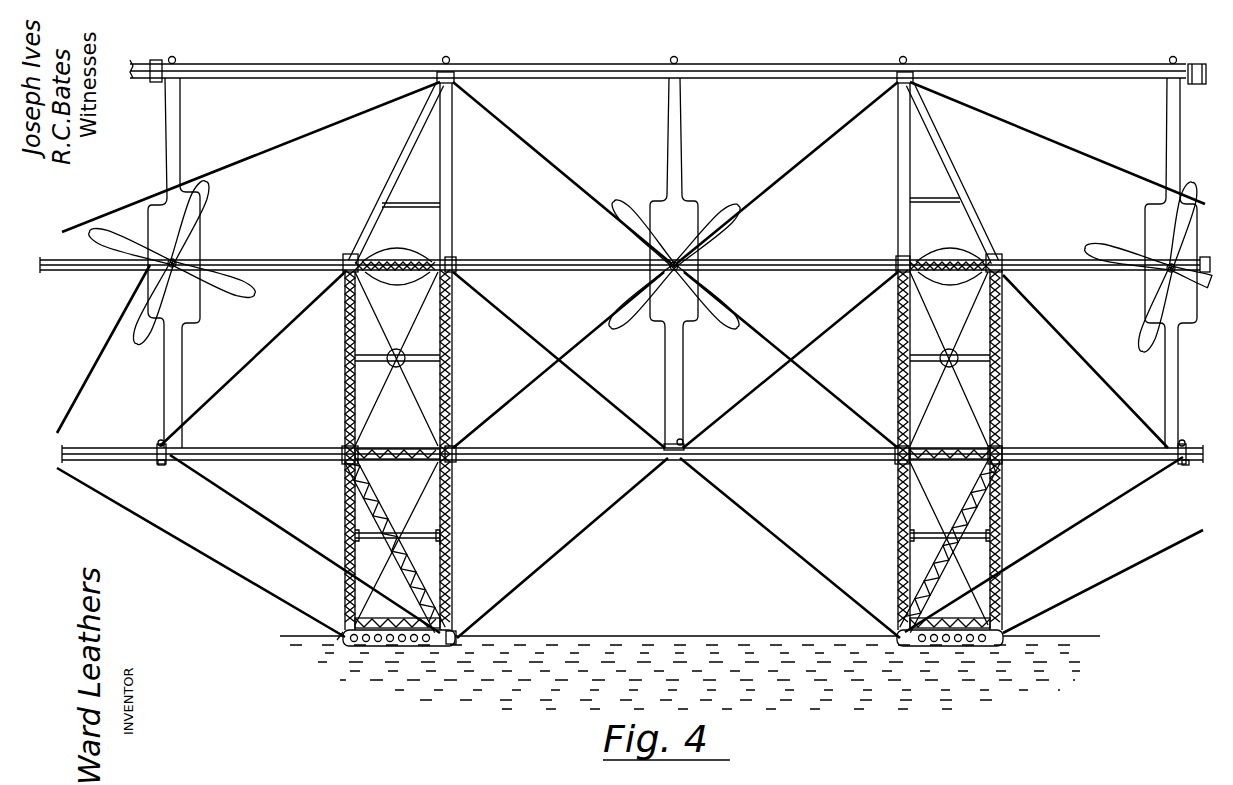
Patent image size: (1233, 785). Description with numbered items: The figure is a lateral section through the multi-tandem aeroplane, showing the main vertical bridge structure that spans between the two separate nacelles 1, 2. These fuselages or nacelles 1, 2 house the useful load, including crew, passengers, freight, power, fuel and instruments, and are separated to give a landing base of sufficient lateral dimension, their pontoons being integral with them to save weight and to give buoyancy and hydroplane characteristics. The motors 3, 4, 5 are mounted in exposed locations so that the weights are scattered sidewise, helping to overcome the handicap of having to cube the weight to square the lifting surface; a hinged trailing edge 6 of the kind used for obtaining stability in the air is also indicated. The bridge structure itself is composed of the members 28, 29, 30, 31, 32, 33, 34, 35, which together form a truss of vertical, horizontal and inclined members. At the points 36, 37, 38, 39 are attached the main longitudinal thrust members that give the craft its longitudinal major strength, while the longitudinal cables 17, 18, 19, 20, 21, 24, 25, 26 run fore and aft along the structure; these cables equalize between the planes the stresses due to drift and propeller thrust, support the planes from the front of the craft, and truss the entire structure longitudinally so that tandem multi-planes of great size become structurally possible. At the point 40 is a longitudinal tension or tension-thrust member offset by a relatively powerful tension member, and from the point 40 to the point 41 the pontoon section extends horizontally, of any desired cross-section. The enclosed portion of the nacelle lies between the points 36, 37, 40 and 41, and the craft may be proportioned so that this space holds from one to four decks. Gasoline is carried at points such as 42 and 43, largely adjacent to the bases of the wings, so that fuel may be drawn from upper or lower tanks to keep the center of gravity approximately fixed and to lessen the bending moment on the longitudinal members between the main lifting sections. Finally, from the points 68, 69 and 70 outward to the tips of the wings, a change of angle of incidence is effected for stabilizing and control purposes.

The nacelle 1 is at (397, 450).
The nacelle 2 is at (949, 364).
The motor 3 is at (171, 262).
The motor 4 is at (674, 264).
The motor 5 is at (1147, 267).
The hinged trailing edge 6 is at (1195, 66).
The longitudinal cable 17 is at (174, 242).
The longitudinal cable 18 is at (447, 60).
The longitudinal cable 19 is at (674, 242).
The longitudinal cable 20 is at (906, 60).
The longitudinal cable 21 is at (1171, 244).
The longitudinal cable 24 is at (158, 446).
The longitudinal cable 25 is at (682, 440).
The longitudinal cable 26 is at (1183, 446).
The bridge structure member 28 is at (394, 282).
The bridge structure member 29 is at (337, 450).
The bridge structure member 30 is at (459, 446).
The bridge structure member 31 is at (385, 460).
The bridge structure member 32 is at (377, 530).
The bridge structure member 33 is at (453, 537).
The bridge structure member 34 is at (399, 173).
The bridge structure member 35 is at (455, 177).
The thrust member attachment point 36 is at (346, 256).
The thrust member attachment point 37 is at (455, 260).
The thrust member attachment point 38 is at (345, 463).
The thrust member attachment point 39 is at (452, 462).
The longitudinal tension-thrust member point 40 is at (462, 641).
The pontoon section end point 41 is at (343, 643).
The gasoline carrying point 42 is at (403, 258).
The gasoline carrying point 43 is at (387, 646).
The incidence change point 68 is at (1186, 464).
The incidence change point 69 is at (157, 60).
The incidence change point 70 is at (161, 465).